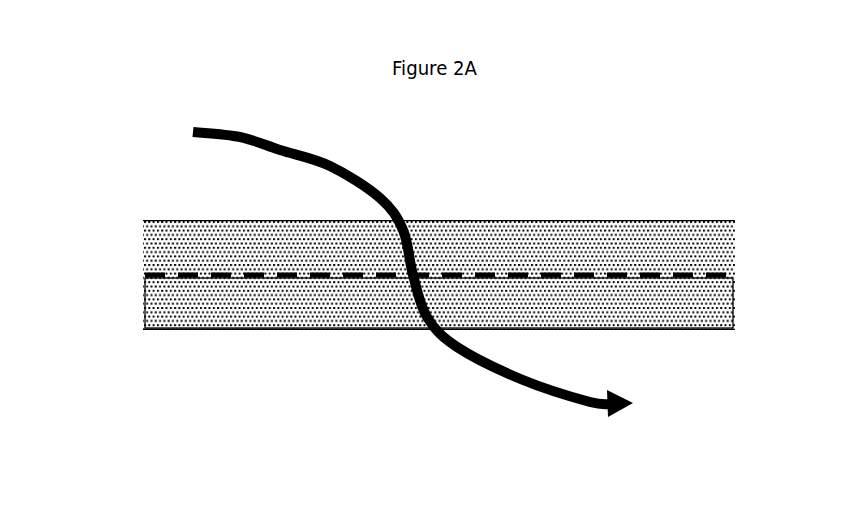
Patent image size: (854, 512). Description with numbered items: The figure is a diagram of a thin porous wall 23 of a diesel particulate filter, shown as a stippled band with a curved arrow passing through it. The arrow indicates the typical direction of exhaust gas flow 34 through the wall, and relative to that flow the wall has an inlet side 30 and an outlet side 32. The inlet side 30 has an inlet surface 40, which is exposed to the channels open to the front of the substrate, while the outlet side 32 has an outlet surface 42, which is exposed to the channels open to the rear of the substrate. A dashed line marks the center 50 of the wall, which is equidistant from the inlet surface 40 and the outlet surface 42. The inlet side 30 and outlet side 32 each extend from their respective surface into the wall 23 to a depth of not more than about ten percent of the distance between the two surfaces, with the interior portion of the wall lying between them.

The porous wall 23 is at (195, 300).
The inlet side 30 is at (618, 220).
The outlet side 32 is at (167, 330).
The direction of exhaust gas flow 34 is at (387, 200).
The inlet surface 40 is at (557, 220).
The outlet surface 42 is at (322, 330).
The center 50 is at (688, 275).